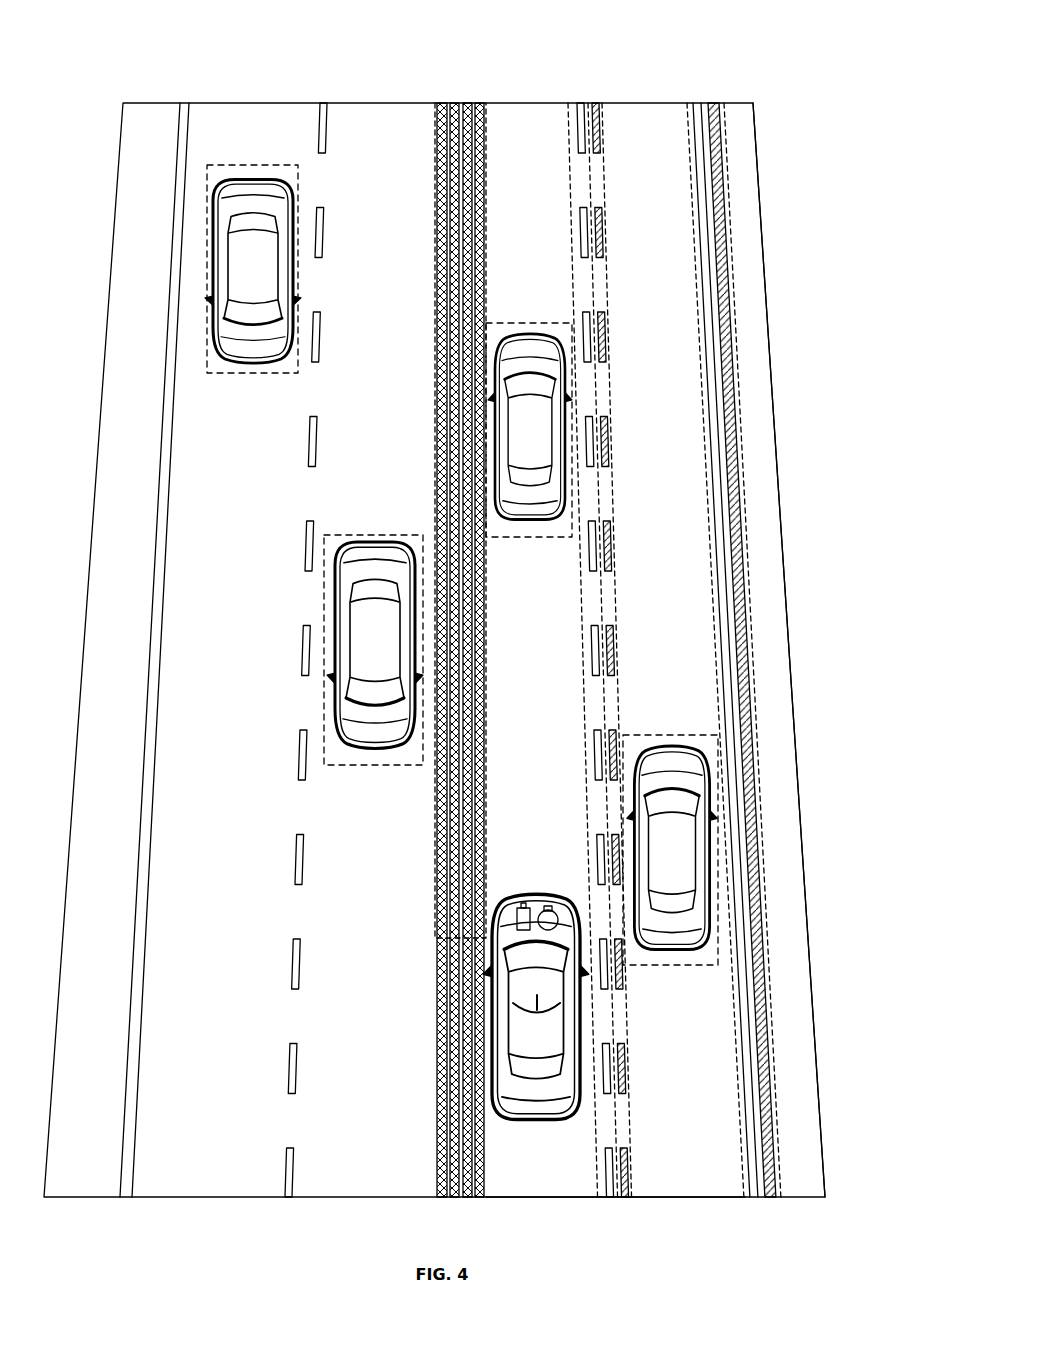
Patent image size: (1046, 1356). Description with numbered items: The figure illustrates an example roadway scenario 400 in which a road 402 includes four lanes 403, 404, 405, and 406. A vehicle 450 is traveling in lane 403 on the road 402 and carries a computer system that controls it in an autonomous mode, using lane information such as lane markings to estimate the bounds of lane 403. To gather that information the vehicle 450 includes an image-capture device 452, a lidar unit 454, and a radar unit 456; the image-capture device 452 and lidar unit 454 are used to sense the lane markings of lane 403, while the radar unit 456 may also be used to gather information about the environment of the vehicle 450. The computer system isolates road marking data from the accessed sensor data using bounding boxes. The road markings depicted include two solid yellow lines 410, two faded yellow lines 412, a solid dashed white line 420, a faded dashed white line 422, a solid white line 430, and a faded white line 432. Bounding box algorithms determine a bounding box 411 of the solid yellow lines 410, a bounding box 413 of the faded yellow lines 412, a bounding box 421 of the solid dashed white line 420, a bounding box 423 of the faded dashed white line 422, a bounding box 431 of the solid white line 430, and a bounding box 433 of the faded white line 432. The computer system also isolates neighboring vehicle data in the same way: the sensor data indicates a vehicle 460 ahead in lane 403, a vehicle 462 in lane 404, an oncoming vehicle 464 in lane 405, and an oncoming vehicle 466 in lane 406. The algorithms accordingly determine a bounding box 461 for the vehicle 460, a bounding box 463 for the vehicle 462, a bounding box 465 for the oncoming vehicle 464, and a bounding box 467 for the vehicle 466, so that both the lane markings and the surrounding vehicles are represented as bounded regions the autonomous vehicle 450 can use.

The roadway scenario 400 is at (658, 32).
The road 402 is at (742, 150).
The lane 403 is at (537, 1168).
The lane 404 is at (679, 1170).
The lane 405 is at (355, 1165).
The lane 406 is at (199, 1165).
The solid yellow lines 410 is at (435, 848).
The bounding box 411 is at (435, 784).
The faded yellow lines 412 is at (485, 841).
The bounding box 413 is at (488, 783).
The solid dashed white line 420 is at (590, 662).
The bounding box 421 is at (583, 597).
The faded dashed white line 422 is at (612, 662).
The bounding box 423 is at (612, 597).
The solid white line 430 is at (718, 685).
The bounding box 431 is at (708, 508).
The faded white line 432 is at (750, 668).
The bounding box 433 is at (752, 598).
The vehicle 450 is at (522, 1045).
The image-capture device 452 is at (518, 922).
The lidar unit 454 is at (556, 925).
The radar unit 456 is at (556, 1016).
The vehicle 460 is at (516, 452).
The bounding box 461 is at (550, 541).
The vehicle 462 is at (661, 882).
The bounding box 463 is at (680, 970).
The oncoming vehicle 464 is at (361, 637).
The bounding box 465 is at (365, 535).
The oncoming vehicle 466 is at (236, 259).
The bounding box 467 is at (245, 163).